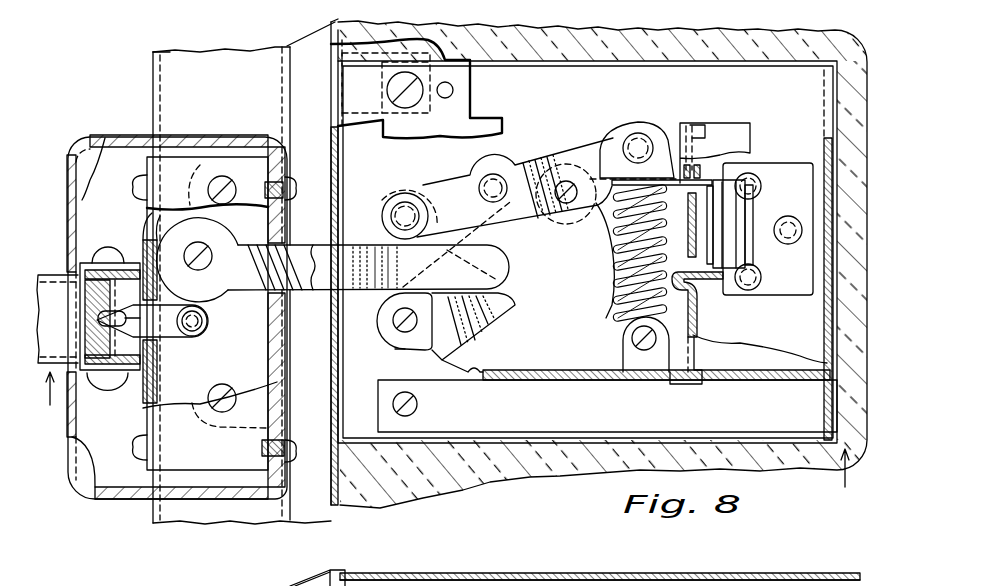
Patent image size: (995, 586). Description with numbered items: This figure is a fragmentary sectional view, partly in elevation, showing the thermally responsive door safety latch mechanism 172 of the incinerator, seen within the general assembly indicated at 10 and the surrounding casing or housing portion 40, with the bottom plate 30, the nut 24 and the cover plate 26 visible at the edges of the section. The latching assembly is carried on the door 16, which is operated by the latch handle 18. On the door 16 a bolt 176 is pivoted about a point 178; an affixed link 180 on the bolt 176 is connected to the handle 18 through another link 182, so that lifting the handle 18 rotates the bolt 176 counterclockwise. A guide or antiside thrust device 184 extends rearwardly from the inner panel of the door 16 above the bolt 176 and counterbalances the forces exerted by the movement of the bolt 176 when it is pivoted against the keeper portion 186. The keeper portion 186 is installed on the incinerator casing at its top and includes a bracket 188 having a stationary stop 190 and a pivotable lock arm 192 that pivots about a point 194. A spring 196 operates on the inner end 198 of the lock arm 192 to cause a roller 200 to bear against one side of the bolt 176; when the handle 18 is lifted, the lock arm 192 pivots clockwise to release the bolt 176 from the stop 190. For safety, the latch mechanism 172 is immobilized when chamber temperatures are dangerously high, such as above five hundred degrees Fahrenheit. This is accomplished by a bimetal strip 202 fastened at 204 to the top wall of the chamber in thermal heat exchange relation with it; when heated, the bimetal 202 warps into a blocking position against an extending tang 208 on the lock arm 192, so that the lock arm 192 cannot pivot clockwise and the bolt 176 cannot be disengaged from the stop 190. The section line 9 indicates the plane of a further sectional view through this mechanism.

The section line 9 is at (443, 447).
The switch assembly 10 is at (165, 52).
The door 16 is at (165, 83).
The latch handle 18 is at (52, 280).
The nut 24 is at (200, 583).
The cover plate 26 is at (333, 42).
The base plate 30 is at (527, 572).
The housing 40 is at (407, 487).
The door safety latch mechanism 172 is at (380, 172).
The bolt 176 is at (296, 244).
The pivot point 178 is at (213, 255).
The link 180 is at (210, 311).
The link 182 is at (165, 327).
The guide or antiside thrust device 184 is at (487, 268).
The keeper portion 186 is at (420, 352).
The bracket 188 is at (542, 378).
The stationary stop 190 is at (393, 313).
The lock arm 192 is at (457, 182).
The pivot point 194 is at (568, 203).
The spring 196 is at (615, 306).
The inner end of lock arm 198 is at (655, 145).
The roller 200 is at (387, 218).
The bimetal strip 202 is at (748, 213).
The fastening point 204 is at (775, 255).
The tang 208 is at (707, 180).